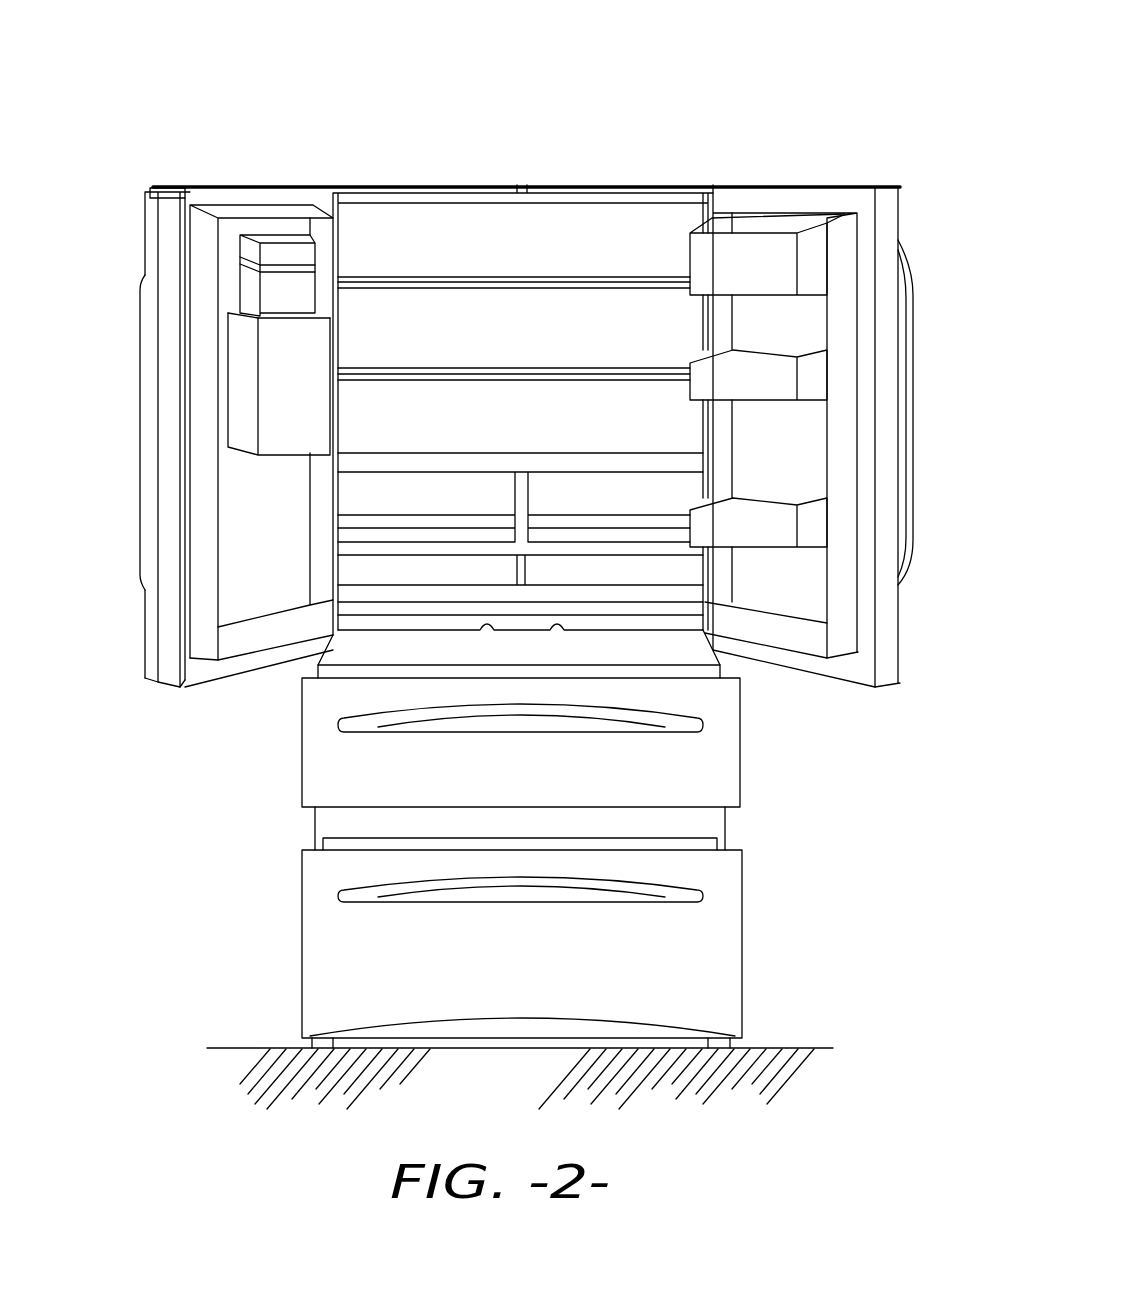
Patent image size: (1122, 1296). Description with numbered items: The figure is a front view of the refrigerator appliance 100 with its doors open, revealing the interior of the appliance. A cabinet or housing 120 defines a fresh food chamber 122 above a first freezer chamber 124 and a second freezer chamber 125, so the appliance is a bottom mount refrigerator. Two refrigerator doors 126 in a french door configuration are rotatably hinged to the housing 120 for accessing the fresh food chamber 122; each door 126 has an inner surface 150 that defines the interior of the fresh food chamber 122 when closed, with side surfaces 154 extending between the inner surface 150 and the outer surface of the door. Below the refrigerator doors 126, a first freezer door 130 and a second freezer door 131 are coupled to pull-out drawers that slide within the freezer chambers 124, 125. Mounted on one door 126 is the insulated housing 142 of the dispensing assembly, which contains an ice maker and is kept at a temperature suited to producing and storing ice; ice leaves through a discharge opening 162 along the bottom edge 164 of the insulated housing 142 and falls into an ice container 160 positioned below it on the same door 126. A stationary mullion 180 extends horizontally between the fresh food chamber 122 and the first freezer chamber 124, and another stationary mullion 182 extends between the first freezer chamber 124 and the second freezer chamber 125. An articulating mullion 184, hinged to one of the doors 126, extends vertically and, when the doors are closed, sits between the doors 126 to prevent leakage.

The refrigerator appliance 100 is at (737, 97).
The cabinet or housing 120 is at (303, 818).
The fresh food chamber 122 is at (594, 231).
The first freezer chamber 124 is at (355, 672).
The second freezer chamber 125 is at (357, 842).
The refrigerator doors 126 is at (288, 183).
The first freezer door 130 is at (712, 758).
The second freezer door 131 is at (702, 948).
The insulated housing 142 is at (316, 257).
The inner surface 150 is at (233, 192).
The side surfaces 154 is at (173, 187).
The ice container 160 is at (310, 398).
The discharge opening 162 is at (300, 297).
The bottom edge 164 is at (290, 317).
The stationary mullion 180 is at (640, 655).
The stationary mullion 182 is at (708, 815).
The articulating mullion 184 is at (157, 520).